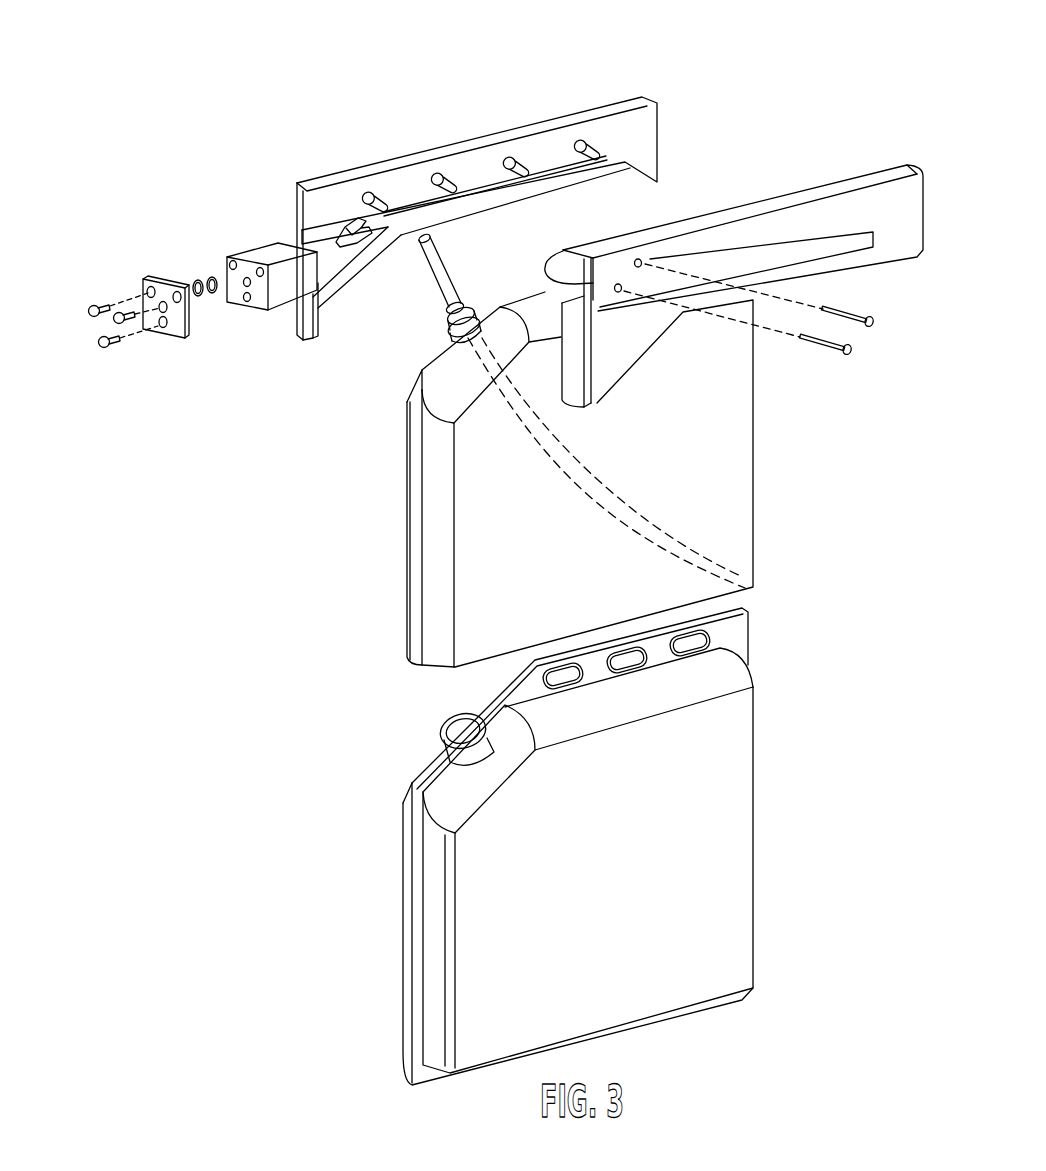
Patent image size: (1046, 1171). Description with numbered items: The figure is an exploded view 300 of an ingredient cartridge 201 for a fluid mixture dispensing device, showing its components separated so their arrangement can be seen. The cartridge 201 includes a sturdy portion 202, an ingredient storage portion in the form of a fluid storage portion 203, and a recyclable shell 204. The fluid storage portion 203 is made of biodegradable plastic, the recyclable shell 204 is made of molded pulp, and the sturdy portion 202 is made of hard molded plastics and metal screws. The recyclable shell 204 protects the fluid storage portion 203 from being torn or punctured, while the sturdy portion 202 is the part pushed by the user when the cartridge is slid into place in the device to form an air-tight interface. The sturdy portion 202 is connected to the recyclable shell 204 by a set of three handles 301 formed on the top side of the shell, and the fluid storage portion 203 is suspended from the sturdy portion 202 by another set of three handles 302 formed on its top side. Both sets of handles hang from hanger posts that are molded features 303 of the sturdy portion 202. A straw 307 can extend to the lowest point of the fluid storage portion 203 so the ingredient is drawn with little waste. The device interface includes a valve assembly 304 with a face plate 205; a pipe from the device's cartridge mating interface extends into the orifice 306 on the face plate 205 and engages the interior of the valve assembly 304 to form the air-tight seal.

The ingredient cartridge 201 is at (350, 932).
The sturdy portion 202 is at (850, 115).
The fluid storage portion 203 is at (612, 478).
The recyclable shell 204 is at (579, 897).
The face plate 205 is at (168, 333).
The exploded view 300 is at (457, 63).
The handles 301 is at (784, 633).
The handles 302 is at (551, 262).
The molded features 303 is at (469, 177).
The valve assembly 304 is at (243, 352).
The orifice 306 is at (143, 300).
The straw 307 is at (436, 282).